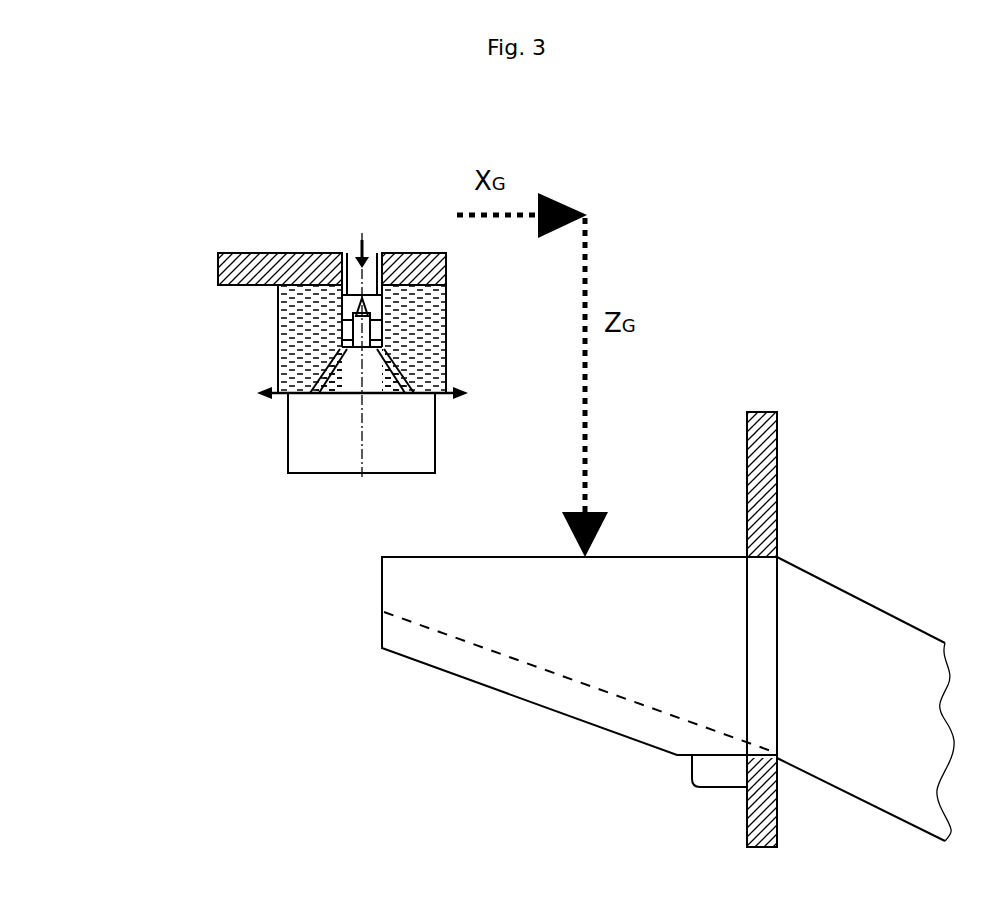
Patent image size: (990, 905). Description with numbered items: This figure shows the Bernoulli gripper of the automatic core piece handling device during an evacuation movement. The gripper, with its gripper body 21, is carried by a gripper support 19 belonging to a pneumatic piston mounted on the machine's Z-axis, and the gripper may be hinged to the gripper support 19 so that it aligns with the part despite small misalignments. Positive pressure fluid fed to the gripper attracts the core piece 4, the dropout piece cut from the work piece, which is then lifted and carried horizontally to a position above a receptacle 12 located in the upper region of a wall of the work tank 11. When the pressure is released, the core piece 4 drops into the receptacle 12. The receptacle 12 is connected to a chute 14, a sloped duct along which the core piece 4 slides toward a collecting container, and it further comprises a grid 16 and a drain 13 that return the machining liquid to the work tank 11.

The gripper support 19 is at (237, 268).
The gripper body 21 is at (300, 344).
The core piece 4 is at (340, 423).
The work tank 11 is at (760, 443).
The receptacle 12 is at (657, 562).
The grid 16 is at (612, 695).
The drain 13 is at (703, 765).
The chute 14 is at (805, 641).